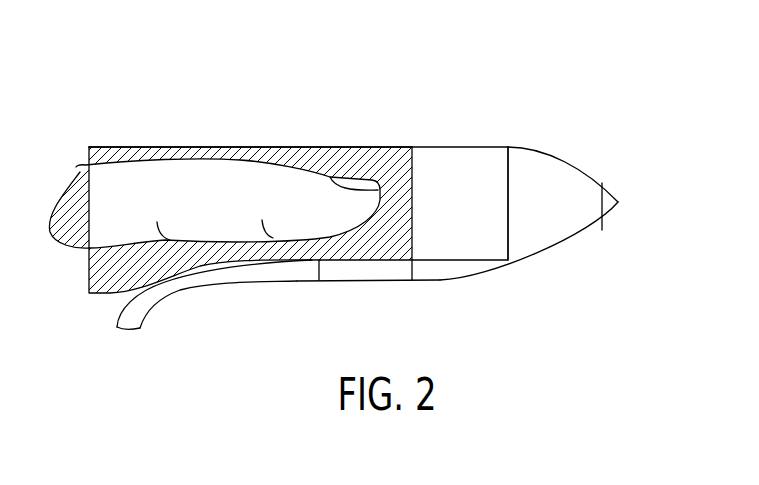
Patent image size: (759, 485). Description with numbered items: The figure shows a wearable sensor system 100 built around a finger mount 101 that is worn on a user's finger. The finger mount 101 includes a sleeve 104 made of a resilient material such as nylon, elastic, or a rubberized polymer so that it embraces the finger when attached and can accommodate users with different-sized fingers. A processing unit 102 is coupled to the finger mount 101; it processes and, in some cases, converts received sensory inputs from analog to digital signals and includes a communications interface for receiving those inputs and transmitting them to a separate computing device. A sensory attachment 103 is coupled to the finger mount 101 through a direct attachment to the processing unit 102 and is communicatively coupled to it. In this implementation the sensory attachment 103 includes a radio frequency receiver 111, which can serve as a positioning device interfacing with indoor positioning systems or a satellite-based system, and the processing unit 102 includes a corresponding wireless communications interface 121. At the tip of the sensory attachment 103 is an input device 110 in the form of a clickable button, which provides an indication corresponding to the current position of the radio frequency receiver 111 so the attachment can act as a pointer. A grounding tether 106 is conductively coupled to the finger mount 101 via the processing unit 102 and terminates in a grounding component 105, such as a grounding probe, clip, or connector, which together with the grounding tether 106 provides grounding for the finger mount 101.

The sensor system 100 is at (670, 107).
The finger mount 101 is at (415, 90).
The processing unit 102 is at (415, 90).
The sensory attachment 103 is at (510, 90).
The sleeve 104 is at (90, 147).
The grounding component 105 is at (84, 232).
The grounding tether 106 is at (238, 284).
The input device 110 is at (621, 203).
The radio frequency receiver 111 is at (553, 237).
The wireless communications interface 121 is at (482, 248).